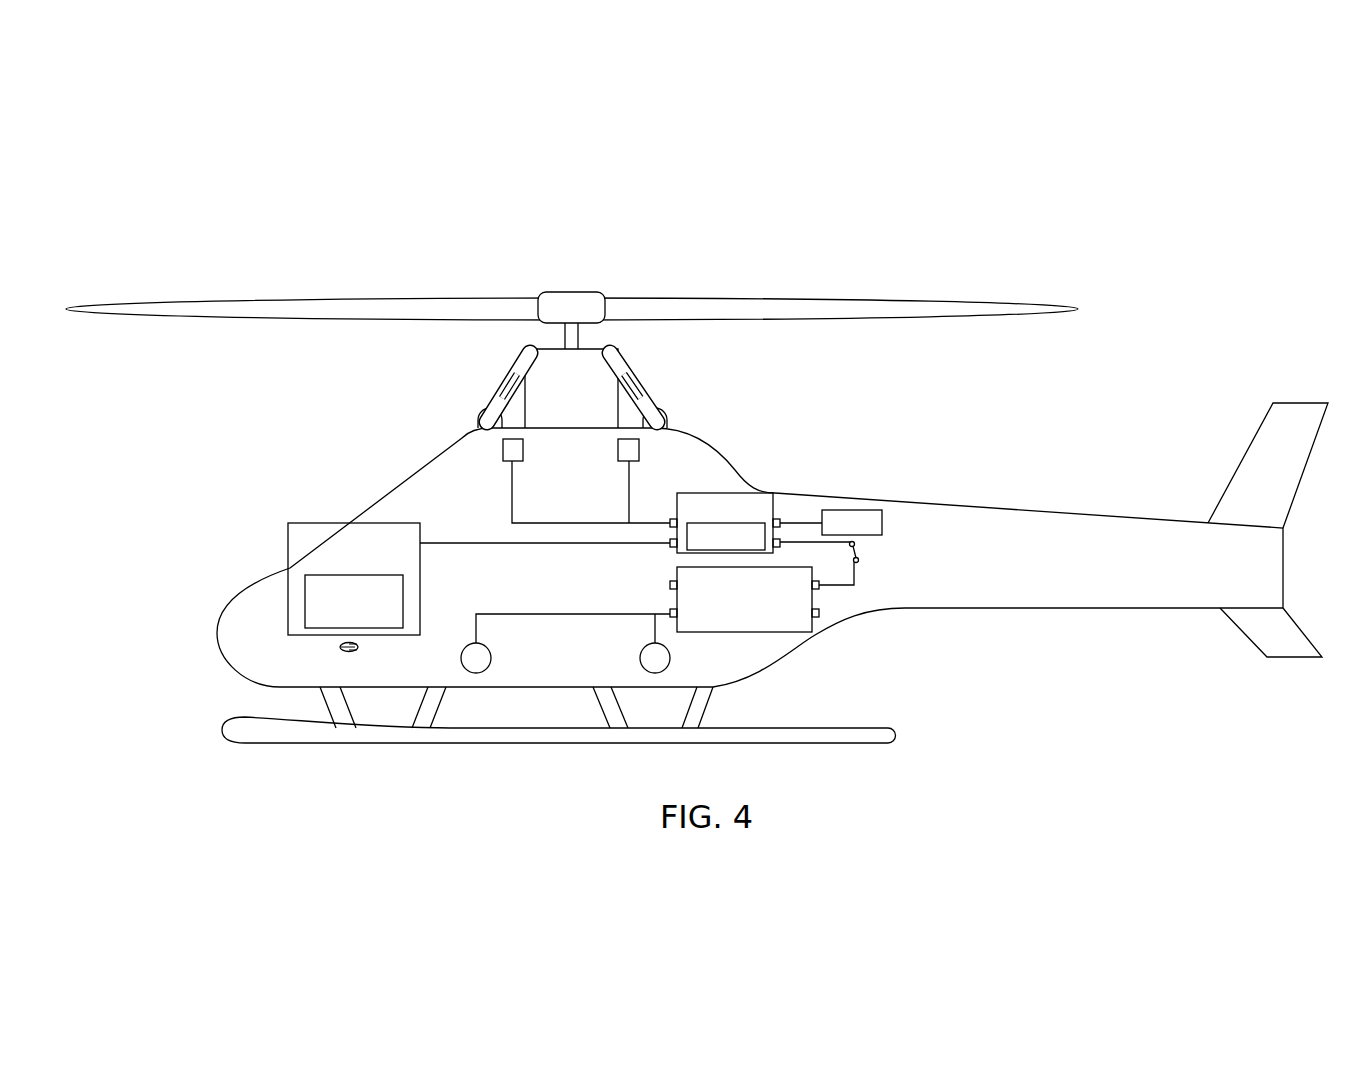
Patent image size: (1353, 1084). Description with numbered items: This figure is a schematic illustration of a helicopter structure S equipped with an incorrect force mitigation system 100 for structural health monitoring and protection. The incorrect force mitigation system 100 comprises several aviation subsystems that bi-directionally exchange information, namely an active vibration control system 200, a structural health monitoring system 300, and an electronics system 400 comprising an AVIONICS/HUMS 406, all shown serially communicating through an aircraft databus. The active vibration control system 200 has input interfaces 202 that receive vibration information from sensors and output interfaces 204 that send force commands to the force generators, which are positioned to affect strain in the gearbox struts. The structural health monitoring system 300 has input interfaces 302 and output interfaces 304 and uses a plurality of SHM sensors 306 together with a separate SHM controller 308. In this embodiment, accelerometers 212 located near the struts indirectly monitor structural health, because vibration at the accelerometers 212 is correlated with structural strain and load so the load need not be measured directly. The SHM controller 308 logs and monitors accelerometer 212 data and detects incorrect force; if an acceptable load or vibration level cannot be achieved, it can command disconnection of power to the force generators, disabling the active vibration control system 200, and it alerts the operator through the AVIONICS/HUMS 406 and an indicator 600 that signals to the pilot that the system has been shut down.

The structure S is at (268, 221).
The incorrect force mitigation system 100 is at (430, 503).
The active vibration control system 200 is at (748, 636).
The input interfaces 202 is at (807, 634).
The output interfaces 204 is at (698, 633).
The accelerometers 212 is at (618, 453).
The structural health monitoring system 300 is at (750, 478).
The input interfaces 302 is at (668, 517).
The output interfaces 304 is at (786, 506).
The SHM sensors 306 is at (608, 388).
The SHM controller 308 is at (687, 552).
The electronics system 400 is at (268, 578).
The AVIONICS/HUMS 406 is at (302, 607).
The indicator 600 is at (368, 690).